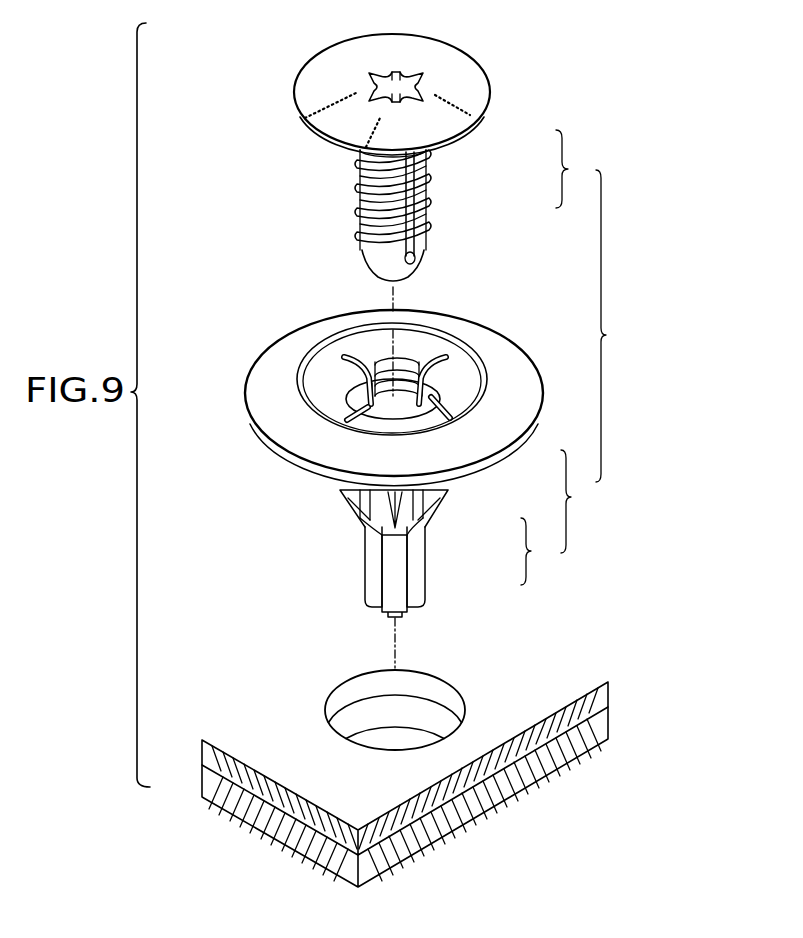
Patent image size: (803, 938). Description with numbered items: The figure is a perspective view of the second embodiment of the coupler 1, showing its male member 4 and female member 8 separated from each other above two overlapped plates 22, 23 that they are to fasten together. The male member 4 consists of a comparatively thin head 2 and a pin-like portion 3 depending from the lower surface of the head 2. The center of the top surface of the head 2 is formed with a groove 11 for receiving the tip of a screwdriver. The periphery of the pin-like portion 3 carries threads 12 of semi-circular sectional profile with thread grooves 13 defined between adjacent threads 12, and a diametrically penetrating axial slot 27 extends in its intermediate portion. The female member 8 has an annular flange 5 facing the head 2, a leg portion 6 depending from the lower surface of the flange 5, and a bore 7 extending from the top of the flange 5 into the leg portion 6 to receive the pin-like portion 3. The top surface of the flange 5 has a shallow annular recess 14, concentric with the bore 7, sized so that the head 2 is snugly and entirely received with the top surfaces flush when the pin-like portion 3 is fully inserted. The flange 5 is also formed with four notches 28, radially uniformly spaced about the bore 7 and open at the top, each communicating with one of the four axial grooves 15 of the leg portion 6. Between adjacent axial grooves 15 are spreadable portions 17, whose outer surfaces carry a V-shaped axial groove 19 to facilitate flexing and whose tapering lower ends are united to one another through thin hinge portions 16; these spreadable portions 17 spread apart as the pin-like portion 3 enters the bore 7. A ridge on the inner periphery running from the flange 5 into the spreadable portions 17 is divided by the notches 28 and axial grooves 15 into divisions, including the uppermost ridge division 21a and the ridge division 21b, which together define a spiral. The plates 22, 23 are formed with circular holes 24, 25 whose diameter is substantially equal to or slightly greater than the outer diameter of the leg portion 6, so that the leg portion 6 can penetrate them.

The coupler 1 is at (624, 349).
The head 2 is at (487, 97).
The pin-like portion 3 is at (430, 187).
The male member 4 is at (568, 169).
The flange 5 is at (517, 430).
The leg portion 6 is at (444, 537).
The bore 7 is at (398, 396).
The female member 8 is at (573, 501).
The groove 11 is at (405, 75).
The threads 12 is at (381, 188).
The thread grooves 13 is at (381, 197).
The annular recess 14 is at (313, 372).
The axial grooves 15 is at (410, 572).
The hinge portions 16 is at (400, 590).
The spreadable portions 17 is at (437, 493).
The axial groove 19 is at (385, 520).
The ridge division 21a is at (373, 382).
The ridge division 21b is at (423, 398).
The plate 22 is at (218, 763).
The plate 23 is at (220, 780).
The circular hole 24 is at (363, 692).
The circular hole 25 is at (370, 733).
The axial slot 27 is at (408, 230).
The notches 28 is at (343, 357).